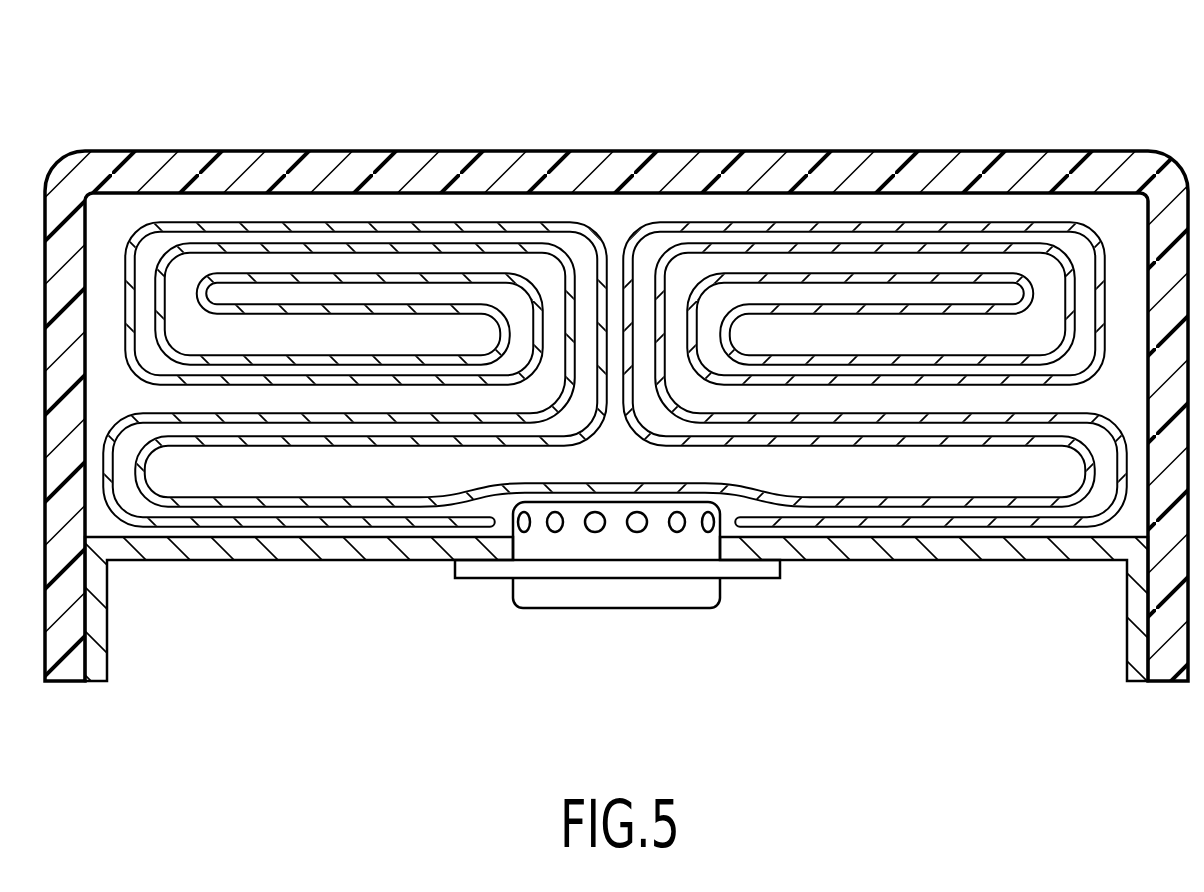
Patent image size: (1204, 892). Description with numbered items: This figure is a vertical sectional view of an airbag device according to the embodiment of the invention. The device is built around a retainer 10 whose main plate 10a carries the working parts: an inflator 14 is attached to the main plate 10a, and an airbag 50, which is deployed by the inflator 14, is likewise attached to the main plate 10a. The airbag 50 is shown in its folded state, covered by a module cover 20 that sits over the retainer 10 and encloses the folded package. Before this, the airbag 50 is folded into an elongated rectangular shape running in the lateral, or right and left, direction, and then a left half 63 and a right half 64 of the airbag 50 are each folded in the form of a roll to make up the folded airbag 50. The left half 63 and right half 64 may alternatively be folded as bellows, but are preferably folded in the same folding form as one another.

The module cover 20 is at (287, 150).
The left half 63 is at (413, 211).
The airbag 50 is at (868, 272).
The right half 64 is at (1000, 221).
The retainer 10 is at (616, 646).
The main plate 10a is at (257, 561).
The inflator 14 is at (652, 602).